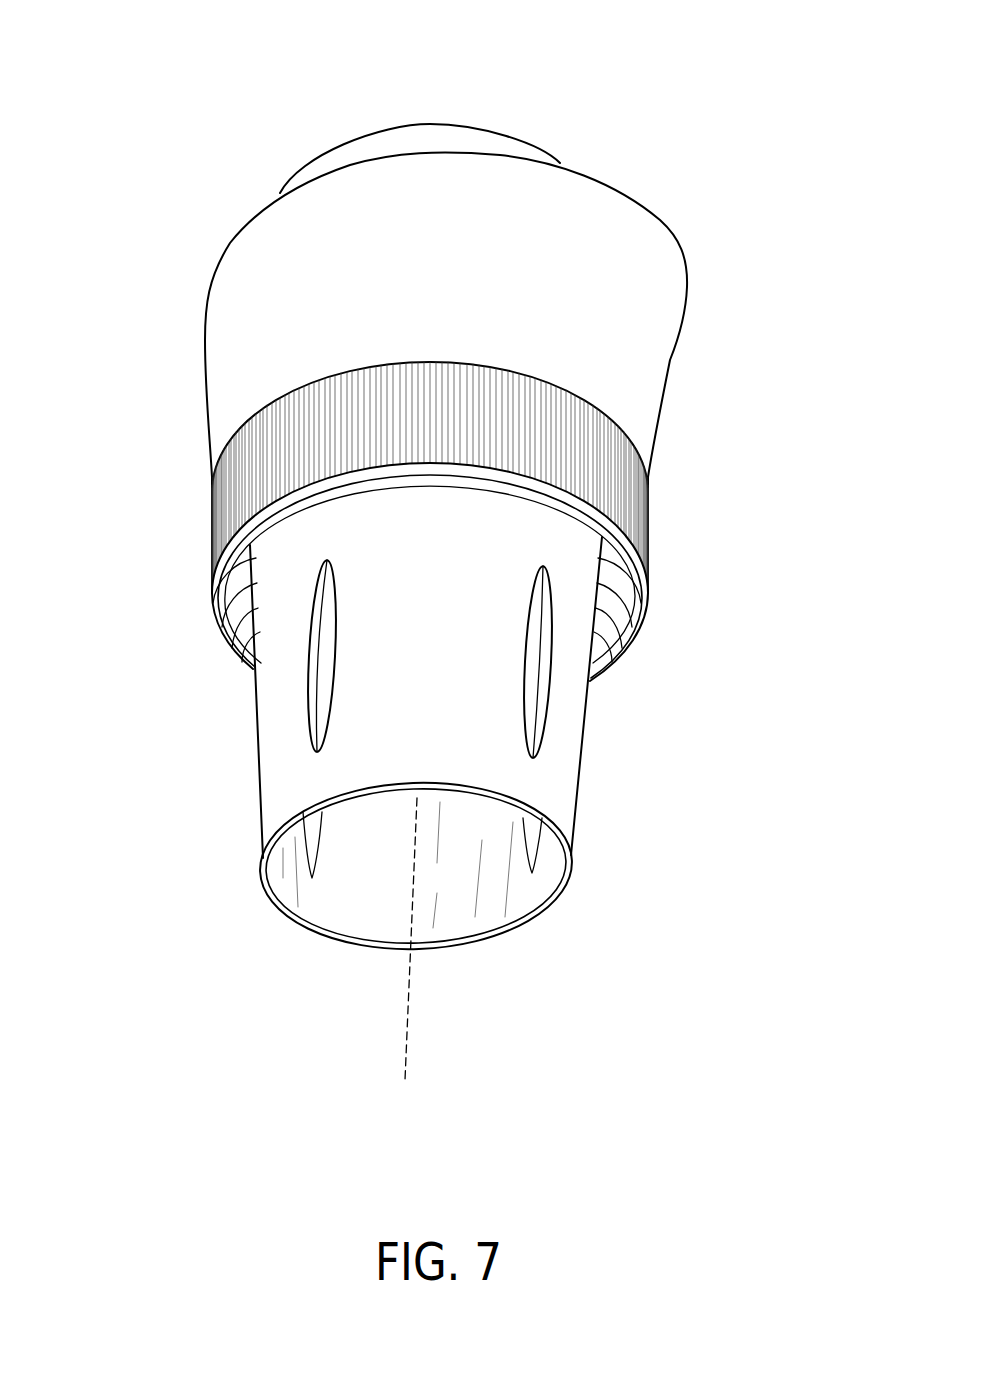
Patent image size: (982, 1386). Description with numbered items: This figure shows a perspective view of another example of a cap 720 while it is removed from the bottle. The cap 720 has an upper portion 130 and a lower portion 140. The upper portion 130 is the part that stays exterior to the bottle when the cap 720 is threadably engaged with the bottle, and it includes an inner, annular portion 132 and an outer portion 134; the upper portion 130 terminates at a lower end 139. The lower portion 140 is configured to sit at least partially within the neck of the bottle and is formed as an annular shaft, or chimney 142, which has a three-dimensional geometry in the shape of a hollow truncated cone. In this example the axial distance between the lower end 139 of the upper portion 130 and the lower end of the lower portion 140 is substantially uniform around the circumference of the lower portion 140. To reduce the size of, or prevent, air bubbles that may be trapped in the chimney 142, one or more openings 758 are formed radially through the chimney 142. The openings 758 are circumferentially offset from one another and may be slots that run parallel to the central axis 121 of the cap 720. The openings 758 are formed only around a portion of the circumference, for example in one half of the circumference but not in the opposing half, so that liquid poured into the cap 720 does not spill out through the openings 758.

The cap 720 is at (255, 104).
The upper portion 130 is at (193, 124).
The inner, annular portion 132 is at (460, 133).
The outer portion 134 is at (683, 245).
The lower end of the upper portion 139 is at (640, 606).
The lower portion 140 is at (350, 948).
The chimney 142 is at (440, 544).
The openings 758 is at (550, 707).
The central axis 121 is at (405, 1020).